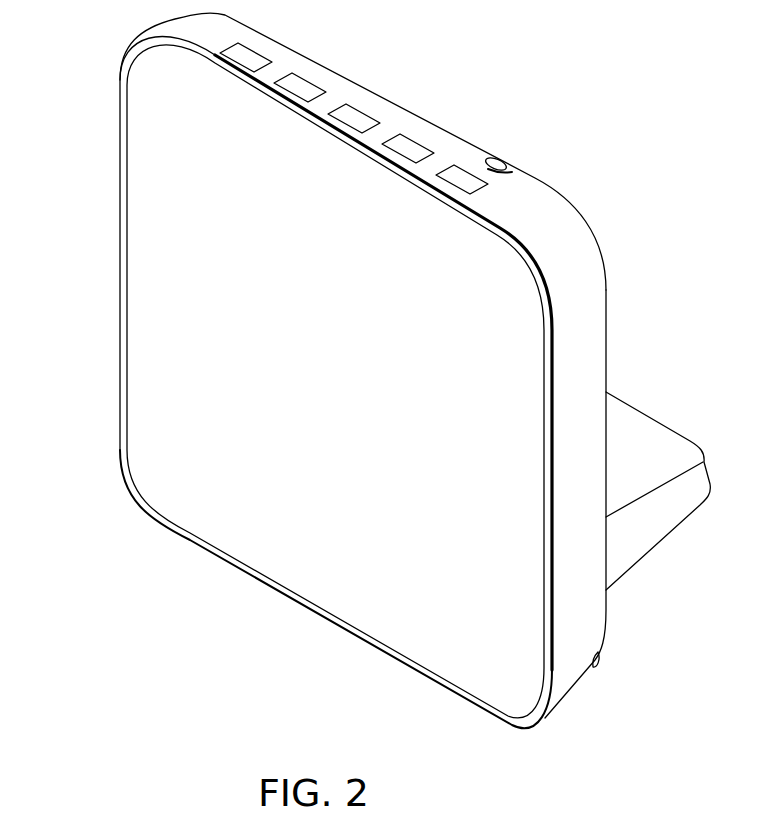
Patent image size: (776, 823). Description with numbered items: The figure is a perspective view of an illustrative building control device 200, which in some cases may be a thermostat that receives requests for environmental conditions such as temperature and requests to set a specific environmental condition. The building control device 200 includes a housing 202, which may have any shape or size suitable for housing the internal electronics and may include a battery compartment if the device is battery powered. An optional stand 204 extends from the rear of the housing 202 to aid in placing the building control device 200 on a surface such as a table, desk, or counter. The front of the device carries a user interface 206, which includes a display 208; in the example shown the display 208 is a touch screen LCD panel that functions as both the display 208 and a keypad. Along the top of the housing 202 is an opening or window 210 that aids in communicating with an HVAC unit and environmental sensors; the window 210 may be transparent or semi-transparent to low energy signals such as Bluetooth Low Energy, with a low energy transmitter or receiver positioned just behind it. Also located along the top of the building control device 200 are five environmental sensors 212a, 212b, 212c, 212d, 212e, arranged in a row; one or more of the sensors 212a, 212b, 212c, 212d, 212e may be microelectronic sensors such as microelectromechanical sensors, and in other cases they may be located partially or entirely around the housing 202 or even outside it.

The building control device 200 is at (553, 92).
The housing 202 is at (597, 333).
The stand 204 is at (663, 522).
The user interface 206 is at (165, 284).
The display 208 is at (165, 482).
The opening or window 210 is at (503, 162).
The environmental sensor 212a is at (237, 63).
The environmental sensor 212b is at (291, 93).
The environmental sensor 212c is at (344, 124).
The environmental sensor 212d is at (399, 155).
The environmental sensor 212e is at (452, 185).